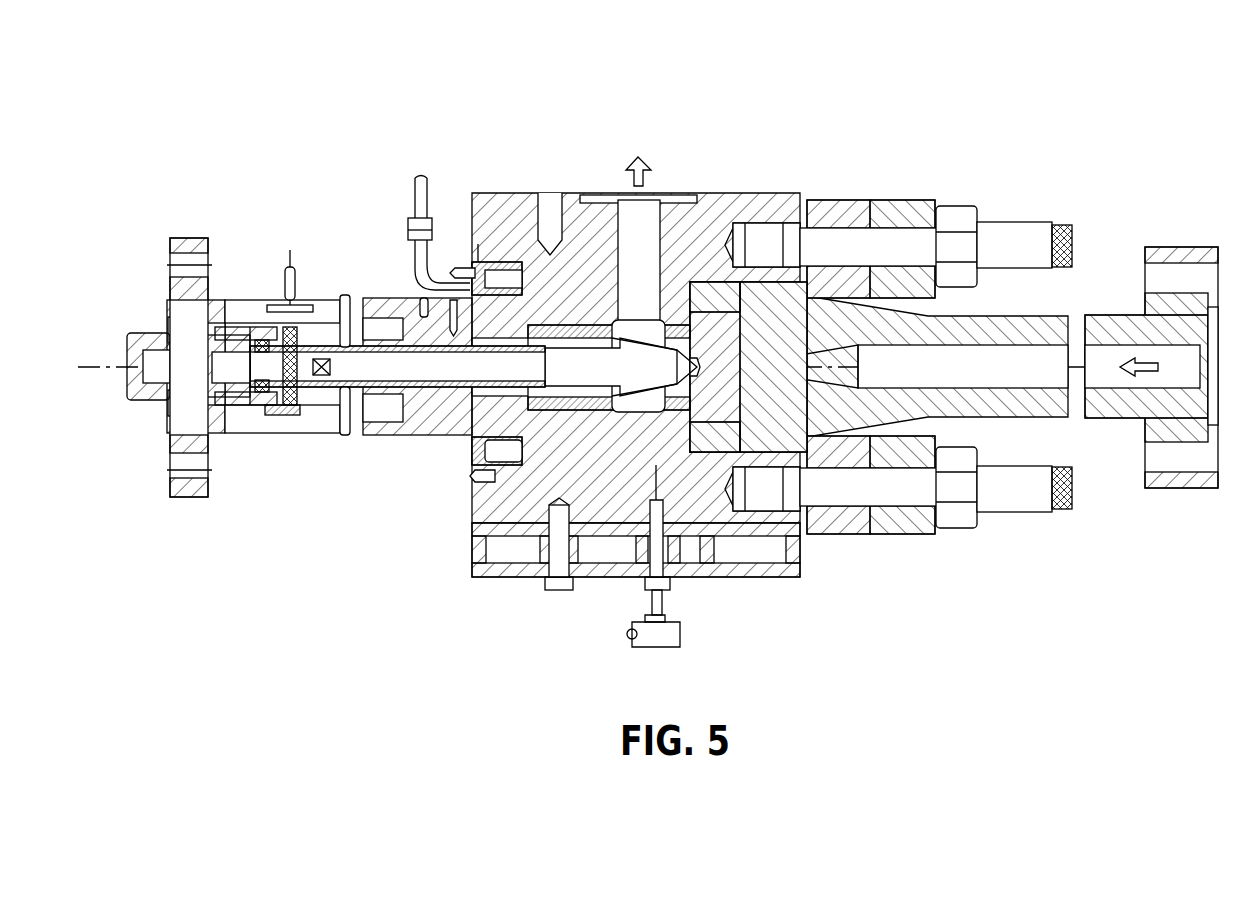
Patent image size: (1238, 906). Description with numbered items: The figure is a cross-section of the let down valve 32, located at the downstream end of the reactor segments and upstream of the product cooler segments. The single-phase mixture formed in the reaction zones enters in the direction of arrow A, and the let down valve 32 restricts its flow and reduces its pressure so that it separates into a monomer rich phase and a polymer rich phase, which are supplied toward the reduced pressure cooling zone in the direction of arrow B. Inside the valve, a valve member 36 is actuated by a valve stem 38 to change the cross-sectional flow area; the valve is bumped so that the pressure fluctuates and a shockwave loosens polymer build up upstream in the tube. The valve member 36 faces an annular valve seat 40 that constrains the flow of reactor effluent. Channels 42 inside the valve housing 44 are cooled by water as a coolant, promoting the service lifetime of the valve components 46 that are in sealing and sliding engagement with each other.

The let down valve 32 is at (648, 358).
The valve member 36 is at (628, 355).
The valve stem 38 is at (372, 362).
The annular valve seat 40 is at (708, 322).
The channels 42 is at (510, 275).
The housing 44 is at (773, 205).
The valve components 46 is at (467, 387).